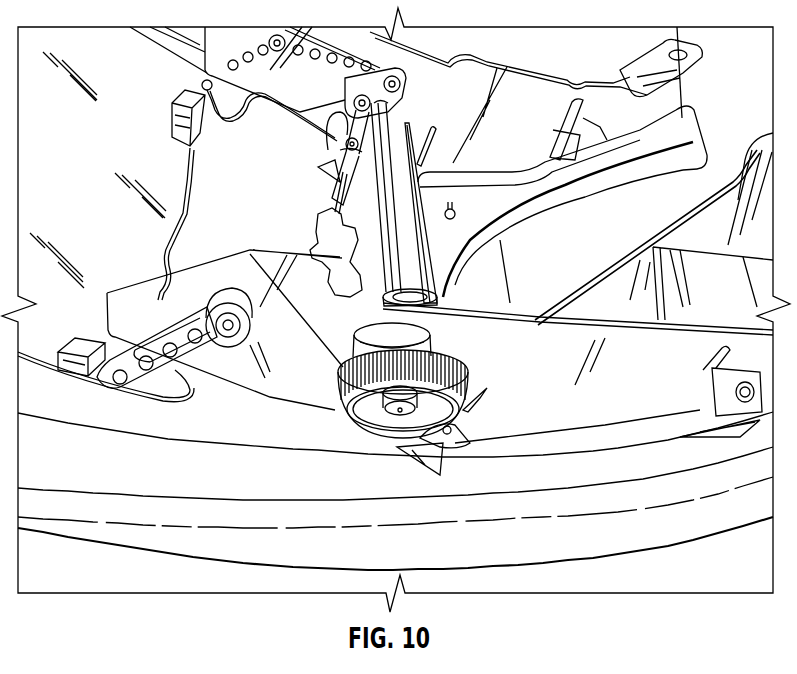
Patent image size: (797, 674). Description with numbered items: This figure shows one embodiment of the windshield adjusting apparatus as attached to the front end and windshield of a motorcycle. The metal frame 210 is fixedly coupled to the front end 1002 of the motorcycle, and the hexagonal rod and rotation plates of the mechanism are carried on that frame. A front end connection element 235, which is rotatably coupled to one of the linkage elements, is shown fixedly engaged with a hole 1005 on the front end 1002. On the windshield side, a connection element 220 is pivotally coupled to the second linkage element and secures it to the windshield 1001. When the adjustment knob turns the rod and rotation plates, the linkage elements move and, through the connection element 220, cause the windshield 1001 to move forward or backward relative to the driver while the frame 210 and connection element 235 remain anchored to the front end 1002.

The windshield 1001 is at (87, 204).
The front end 1002 is at (227, 251).
The connection element 220 is at (172, 128).
The front end connection element 235 is at (335, 137).
The hole 1005 is at (333, 176).
The metal frame 210 is at (640, 405).